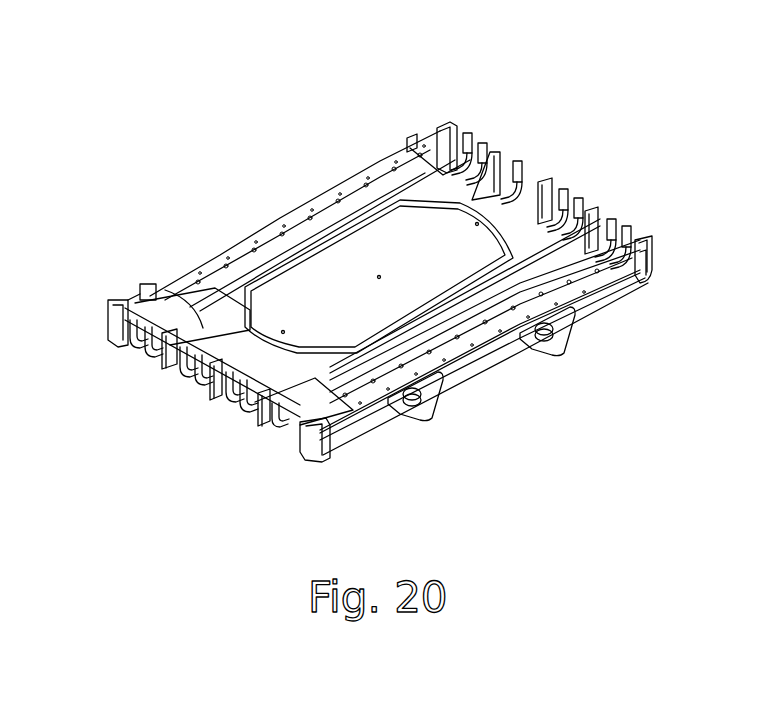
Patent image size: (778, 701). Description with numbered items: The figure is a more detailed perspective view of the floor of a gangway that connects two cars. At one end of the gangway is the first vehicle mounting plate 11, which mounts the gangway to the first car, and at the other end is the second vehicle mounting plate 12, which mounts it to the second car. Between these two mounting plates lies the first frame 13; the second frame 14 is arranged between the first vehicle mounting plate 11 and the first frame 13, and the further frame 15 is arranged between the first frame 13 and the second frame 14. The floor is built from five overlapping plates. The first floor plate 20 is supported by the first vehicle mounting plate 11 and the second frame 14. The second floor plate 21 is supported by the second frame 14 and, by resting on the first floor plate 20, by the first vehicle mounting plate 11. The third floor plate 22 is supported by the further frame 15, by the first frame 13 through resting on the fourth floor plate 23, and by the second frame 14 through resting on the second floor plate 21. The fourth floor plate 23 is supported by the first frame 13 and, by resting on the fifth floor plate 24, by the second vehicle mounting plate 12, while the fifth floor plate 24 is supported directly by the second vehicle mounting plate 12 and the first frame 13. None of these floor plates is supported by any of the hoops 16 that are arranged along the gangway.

The first vehicle mounting plate 11 is at (620, 285).
The second vehicle mounting plate 12 is at (440, 122).
The first frame 13 is at (500, 150).
The second frame 14 is at (595, 205).
The further frame 15 is at (548, 178).
The hoops 16 is at (470, 130).
The first floor plate 20 is at (583, 280).
The second floor plate 21 is at (278, 352).
The third floor plate 22 is at (300, 342).
The fourth floor plate 23 is at (203, 325).
The fifth floor plate 24 is at (140, 292).